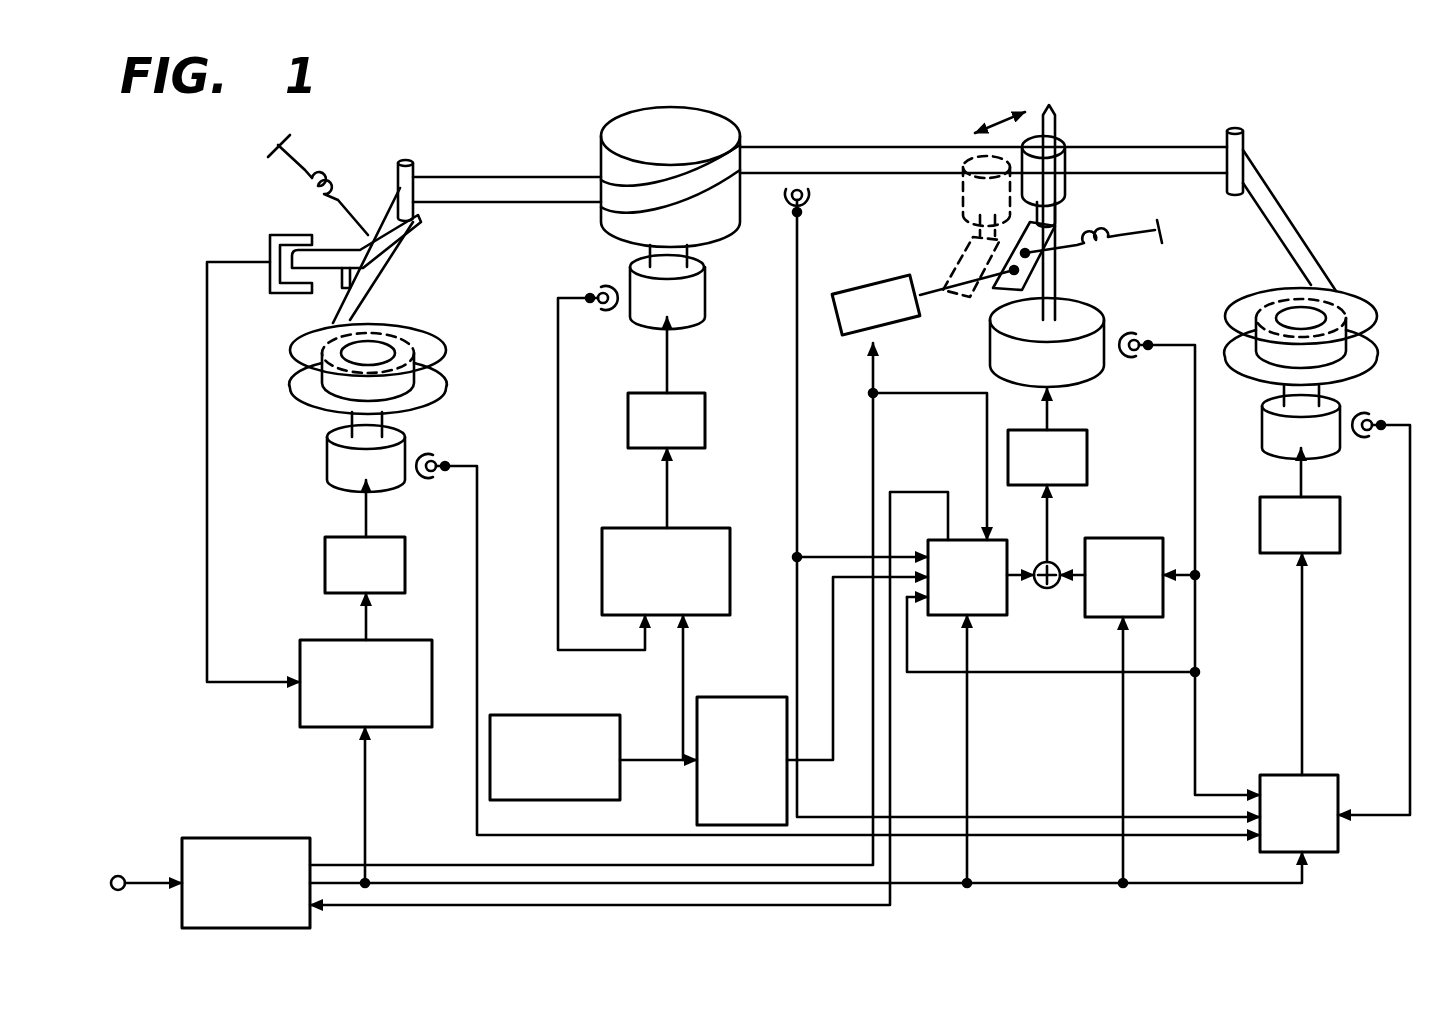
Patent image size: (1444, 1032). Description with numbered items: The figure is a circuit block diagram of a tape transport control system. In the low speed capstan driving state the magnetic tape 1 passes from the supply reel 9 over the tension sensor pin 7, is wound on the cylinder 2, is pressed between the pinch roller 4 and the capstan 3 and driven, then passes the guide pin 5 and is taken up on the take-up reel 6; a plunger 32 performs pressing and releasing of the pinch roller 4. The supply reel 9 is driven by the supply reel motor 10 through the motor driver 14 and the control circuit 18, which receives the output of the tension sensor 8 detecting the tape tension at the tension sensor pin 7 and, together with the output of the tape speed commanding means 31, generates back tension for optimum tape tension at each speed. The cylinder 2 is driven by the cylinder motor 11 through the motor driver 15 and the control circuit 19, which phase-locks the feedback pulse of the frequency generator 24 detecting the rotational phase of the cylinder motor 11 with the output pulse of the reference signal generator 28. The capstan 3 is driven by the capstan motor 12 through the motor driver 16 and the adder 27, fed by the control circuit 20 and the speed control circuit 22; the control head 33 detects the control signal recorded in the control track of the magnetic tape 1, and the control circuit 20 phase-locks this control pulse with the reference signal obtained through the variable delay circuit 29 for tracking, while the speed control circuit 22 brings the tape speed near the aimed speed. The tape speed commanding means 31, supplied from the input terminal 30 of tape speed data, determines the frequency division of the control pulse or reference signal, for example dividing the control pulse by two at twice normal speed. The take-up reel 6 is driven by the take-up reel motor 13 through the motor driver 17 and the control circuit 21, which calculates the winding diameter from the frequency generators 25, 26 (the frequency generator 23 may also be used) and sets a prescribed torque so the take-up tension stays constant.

The magnetic tape 1 is at (496, 175).
The cylinder 2 is at (740, 120).
The capstan 3 is at (1058, 112).
The pinch roller 4 is at (1060, 165).
The guide pin 5 is at (1235, 125).
The take-up reel 6 is at (1377, 298).
The tension sensor pin 7 is at (410, 160).
The tension sensor 8 is at (270, 293).
The supply reel 9 is at (446, 330).
The supply reel motor 10 is at (330, 440).
The cylinder motor 11 is at (708, 280).
The capstan motor 12 is at (1105, 320).
The take-up reel motor 13 is at (1262, 412).
The motor driver 14 is at (325, 577).
The motor driver 15 is at (705, 405).
The motor driver 16 is at (1087, 447).
The motor driver 17 is at (1340, 472).
The control circuit 18 is at (328, 727).
The control circuit 19 is at (712, 527).
The control circuit 20 is at (945, 615).
The control circuit 21 is at (1340, 785).
The speed control circuit 22 is at (1128, 538).
The frequency generator 23 is at (448, 462).
The frequency generator 24 is at (606, 318).
The frequency generator 25 is at (1160, 330).
The frequency generator 26 is at (1380, 415).
The adder 27 is at (1047, 590).
The reference signal generator 28 is at (622, 728).
The variable delay circuit for tracking 29 is at (750, 697).
The input terminal of tape speed data 30 is at (118, 876).
The tape speed commanding means 31 is at (312, 853).
The plunger 32 is at (835, 337).
The control head 33 is at (815, 190).